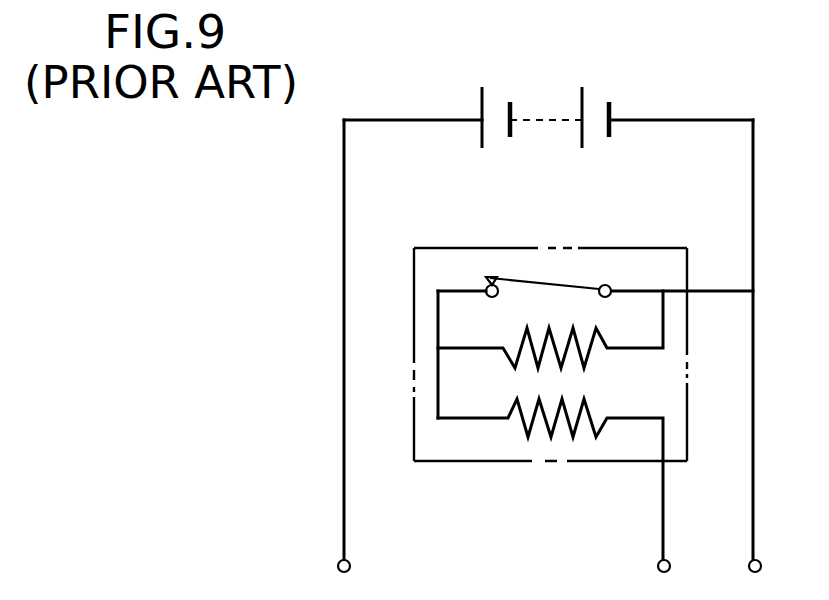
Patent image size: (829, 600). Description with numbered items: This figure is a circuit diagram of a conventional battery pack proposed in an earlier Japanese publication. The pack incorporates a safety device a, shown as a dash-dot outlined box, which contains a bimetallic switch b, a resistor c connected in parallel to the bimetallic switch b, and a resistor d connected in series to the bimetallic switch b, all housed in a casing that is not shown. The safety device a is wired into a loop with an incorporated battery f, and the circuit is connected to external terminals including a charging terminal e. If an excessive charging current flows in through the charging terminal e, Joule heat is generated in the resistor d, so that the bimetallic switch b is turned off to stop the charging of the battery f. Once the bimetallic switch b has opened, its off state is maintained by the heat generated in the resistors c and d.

The safety device a is at (450, 262).
The bimetallic switch b is at (526, 283).
The resistor c is at (587, 360).
The resistor d is at (532, 430).
The charging terminal e is at (657, 566).
The battery f is at (543, 127).